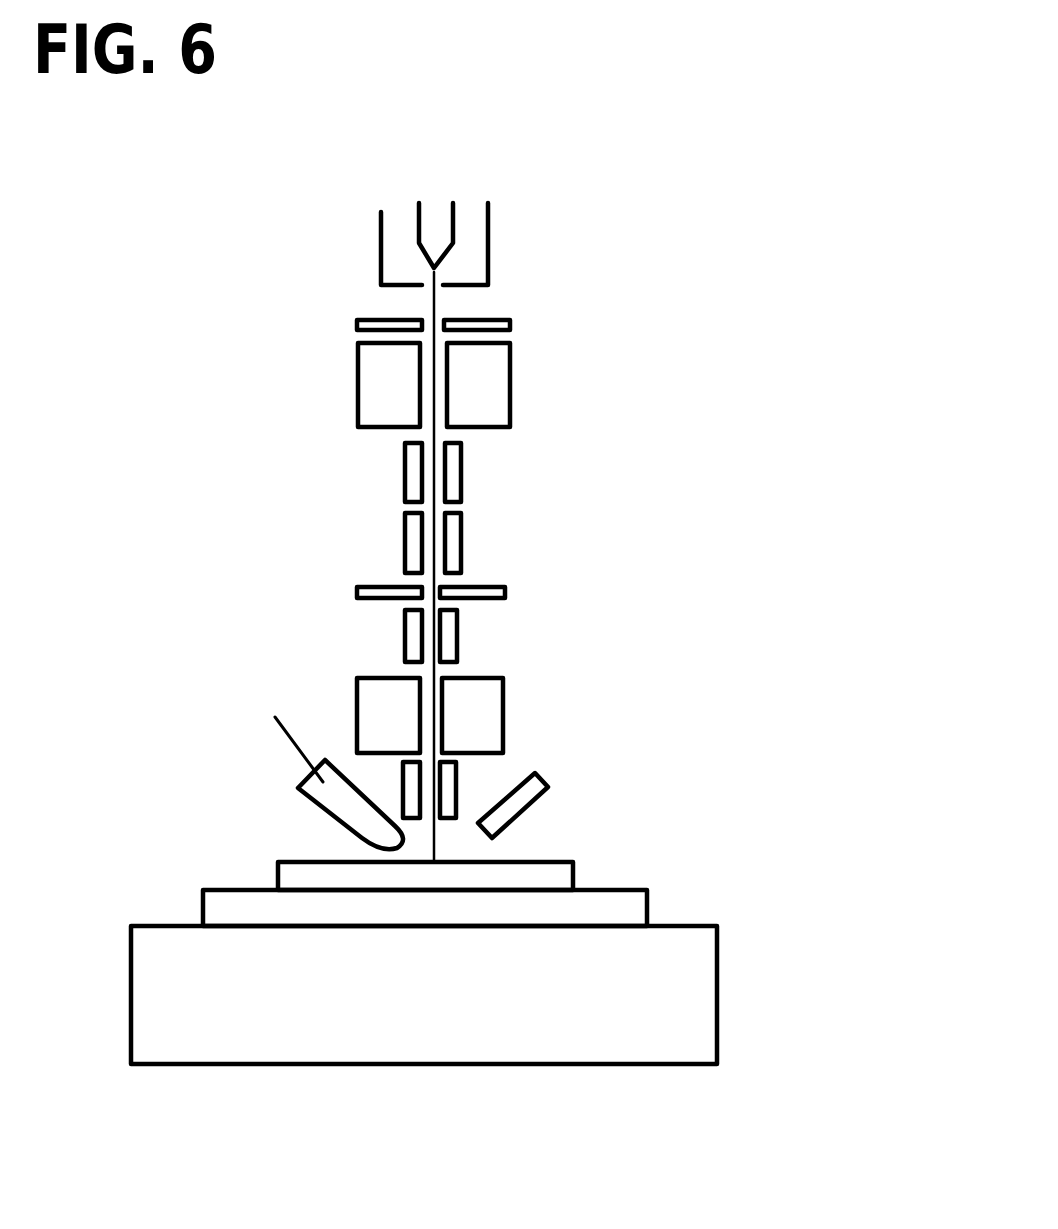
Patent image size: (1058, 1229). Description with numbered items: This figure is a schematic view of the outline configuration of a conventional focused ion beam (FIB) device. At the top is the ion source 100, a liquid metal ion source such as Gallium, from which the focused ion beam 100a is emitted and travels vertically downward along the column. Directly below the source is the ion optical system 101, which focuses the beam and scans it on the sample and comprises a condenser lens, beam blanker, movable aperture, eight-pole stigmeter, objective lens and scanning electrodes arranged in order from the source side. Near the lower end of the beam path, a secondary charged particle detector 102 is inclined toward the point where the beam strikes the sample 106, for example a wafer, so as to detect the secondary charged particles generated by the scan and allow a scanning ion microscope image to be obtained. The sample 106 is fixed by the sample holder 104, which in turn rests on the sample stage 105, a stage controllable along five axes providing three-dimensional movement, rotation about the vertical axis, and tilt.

The ion source 100 is at (437, 252).
The focused ion beam 100a is at (432, 372).
The ion optical system 101 is at (522, 758).
The secondary charged particle detector 102 is at (533, 790).
The sample holder 104 is at (633, 908).
The sample stage 105 is at (703, 1030).
The sample 106 is at (310, 877).